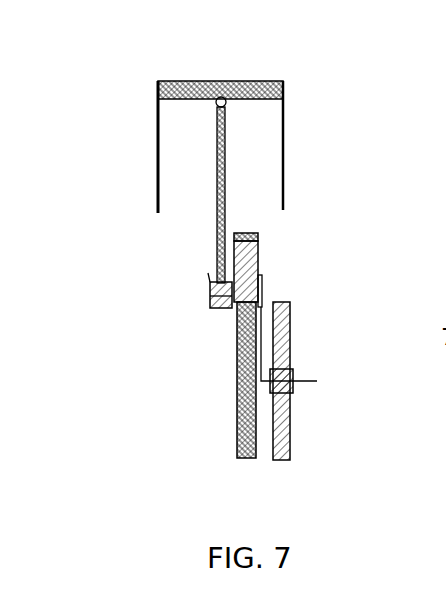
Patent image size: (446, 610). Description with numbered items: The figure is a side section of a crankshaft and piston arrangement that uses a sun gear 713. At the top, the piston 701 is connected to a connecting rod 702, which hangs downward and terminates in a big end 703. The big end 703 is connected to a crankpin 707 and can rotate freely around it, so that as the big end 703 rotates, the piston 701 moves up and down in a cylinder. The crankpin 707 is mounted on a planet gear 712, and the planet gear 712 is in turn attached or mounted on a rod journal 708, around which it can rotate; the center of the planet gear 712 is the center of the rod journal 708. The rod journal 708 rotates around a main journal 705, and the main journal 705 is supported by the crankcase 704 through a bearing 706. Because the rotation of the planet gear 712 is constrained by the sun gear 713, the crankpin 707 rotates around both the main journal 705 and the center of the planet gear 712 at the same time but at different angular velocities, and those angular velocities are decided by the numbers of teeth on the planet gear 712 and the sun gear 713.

The piston 701 is at (205, 125).
The connecting rod 702 is at (134, 190).
The big end 703 is at (116, 238).
The crankcase 704 is at (353, 392).
The main journal 705 is at (343, 370).
The bearing 706 is at (337, 347).
The crankpin 707 is at (138, 321).
The rod journal 708 is at (328, 264).
The planet gear 712 is at (316, 224).
The sun gear 713 is at (174, 391).